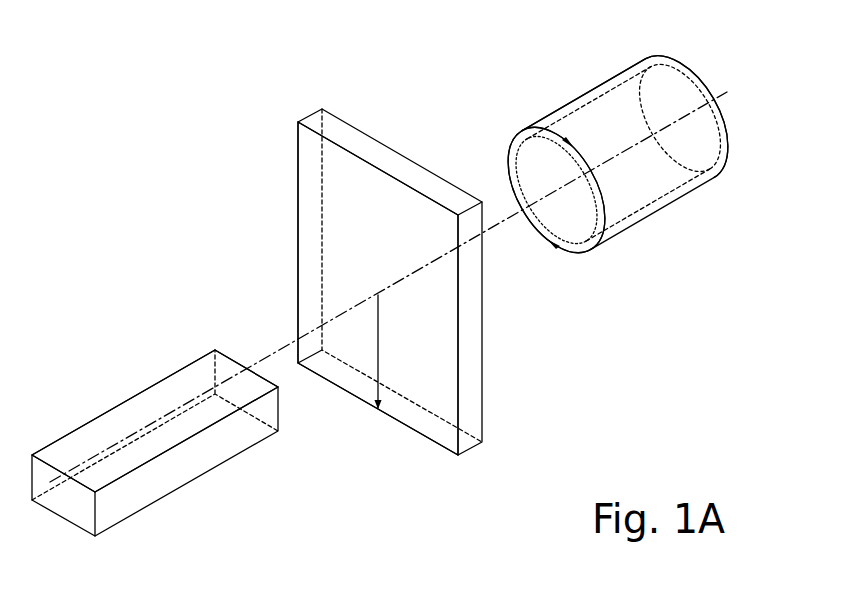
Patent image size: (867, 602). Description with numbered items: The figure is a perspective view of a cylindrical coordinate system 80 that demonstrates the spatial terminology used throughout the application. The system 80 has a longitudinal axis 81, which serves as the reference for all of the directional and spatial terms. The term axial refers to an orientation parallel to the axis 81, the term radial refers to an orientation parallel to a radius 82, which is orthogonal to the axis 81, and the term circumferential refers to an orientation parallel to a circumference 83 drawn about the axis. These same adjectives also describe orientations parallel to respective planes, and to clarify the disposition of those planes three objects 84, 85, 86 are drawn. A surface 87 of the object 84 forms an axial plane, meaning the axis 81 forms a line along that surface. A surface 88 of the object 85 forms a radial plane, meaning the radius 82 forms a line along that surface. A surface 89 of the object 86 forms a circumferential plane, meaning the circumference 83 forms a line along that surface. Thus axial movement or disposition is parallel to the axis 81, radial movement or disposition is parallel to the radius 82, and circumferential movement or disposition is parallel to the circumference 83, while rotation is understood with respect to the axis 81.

The cylindrical coordinate system 80 is at (258, 167).
The longitudinal axis 81 is at (717, 93).
The radius 82 is at (378, 343).
The circumference 83 is at (508, 152).
The object 84 is at (120, 520).
The object 85 is at (490, 447).
The object 86 is at (647, 223).
The surface 87 is at (115, 427).
The surface 88 is at (313, 240).
The surface 89 is at (585, 92).